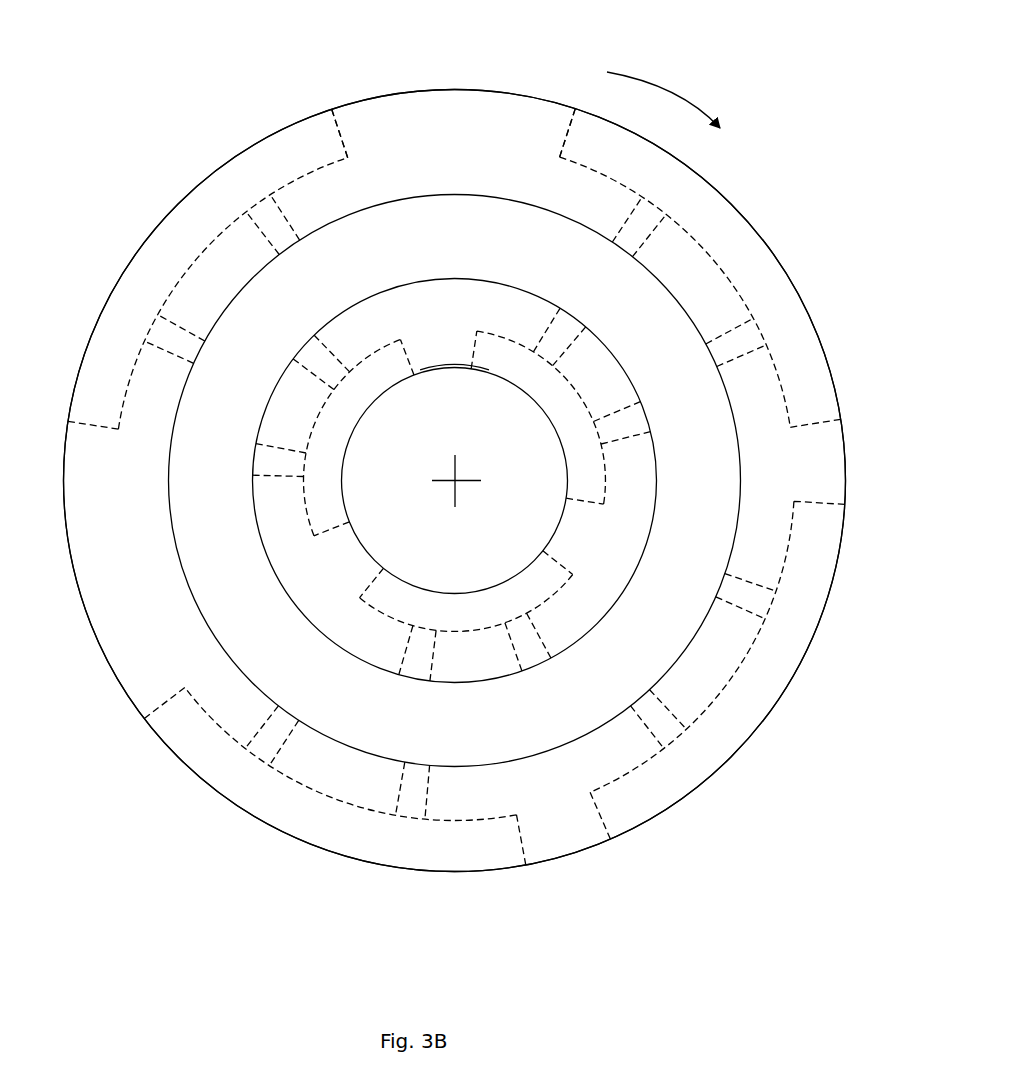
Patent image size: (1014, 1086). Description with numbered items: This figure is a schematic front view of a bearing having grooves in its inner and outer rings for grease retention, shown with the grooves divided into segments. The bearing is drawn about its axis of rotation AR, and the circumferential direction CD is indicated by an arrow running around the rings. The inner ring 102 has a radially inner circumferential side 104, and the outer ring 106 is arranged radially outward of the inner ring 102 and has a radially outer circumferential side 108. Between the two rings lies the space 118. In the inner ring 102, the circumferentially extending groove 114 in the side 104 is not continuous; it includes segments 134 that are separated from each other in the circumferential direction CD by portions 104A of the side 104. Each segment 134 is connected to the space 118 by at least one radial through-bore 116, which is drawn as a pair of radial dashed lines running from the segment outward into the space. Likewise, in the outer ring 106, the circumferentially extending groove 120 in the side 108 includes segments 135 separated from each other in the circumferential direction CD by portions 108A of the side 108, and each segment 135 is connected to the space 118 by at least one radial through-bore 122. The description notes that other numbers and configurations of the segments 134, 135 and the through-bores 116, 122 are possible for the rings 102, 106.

The inner ring 102 is at (660, 490).
The radially inner circumferential side 104 is at (567, 529).
The portions of side 104A is at (447, 364).
The outer ring 106 is at (352, 98).
The radially outer circumferential side 108 is at (767, 234).
The portions of side 108A is at (483, 88).
The circumferentially extending groove 114 is at (499, 326).
The radial through-bore 116 is at (575, 320).
The space 118 is at (667, 360).
The circumferentially extending groove 120 is at (110, 285).
The radial through-bore 122 is at (273, 215).
The segments 134 is at (325, 510).
The segments 135 is at (173, 245).
The axis of rotation AR is at (455, 482).
The circumferential direction CD is at (666, 80).